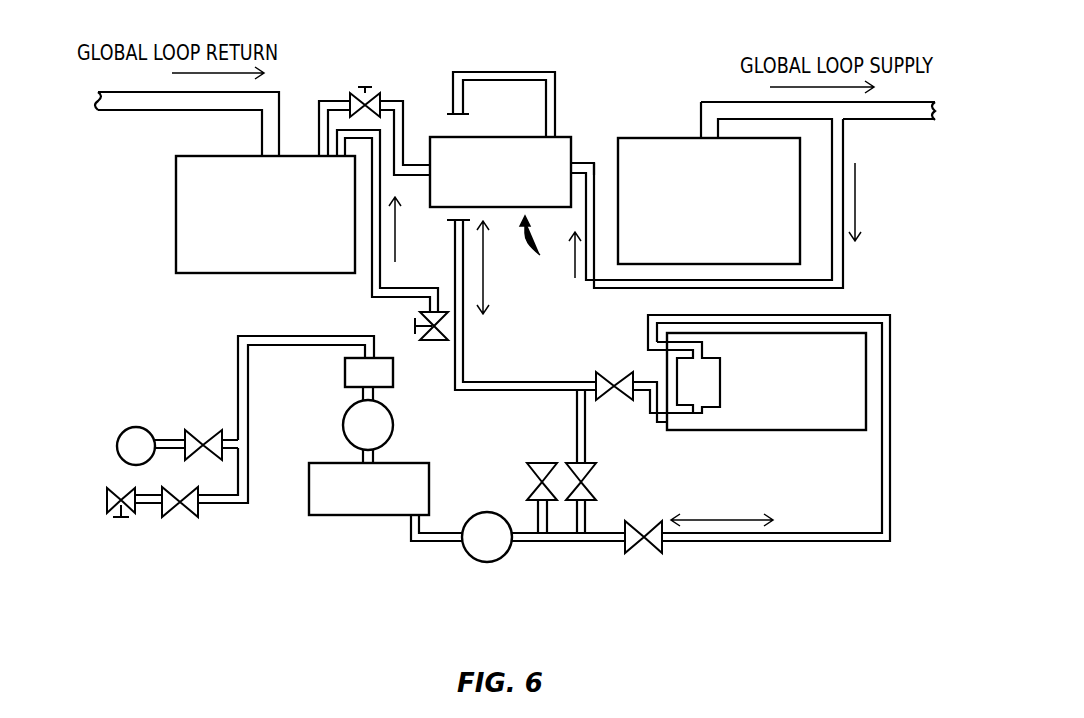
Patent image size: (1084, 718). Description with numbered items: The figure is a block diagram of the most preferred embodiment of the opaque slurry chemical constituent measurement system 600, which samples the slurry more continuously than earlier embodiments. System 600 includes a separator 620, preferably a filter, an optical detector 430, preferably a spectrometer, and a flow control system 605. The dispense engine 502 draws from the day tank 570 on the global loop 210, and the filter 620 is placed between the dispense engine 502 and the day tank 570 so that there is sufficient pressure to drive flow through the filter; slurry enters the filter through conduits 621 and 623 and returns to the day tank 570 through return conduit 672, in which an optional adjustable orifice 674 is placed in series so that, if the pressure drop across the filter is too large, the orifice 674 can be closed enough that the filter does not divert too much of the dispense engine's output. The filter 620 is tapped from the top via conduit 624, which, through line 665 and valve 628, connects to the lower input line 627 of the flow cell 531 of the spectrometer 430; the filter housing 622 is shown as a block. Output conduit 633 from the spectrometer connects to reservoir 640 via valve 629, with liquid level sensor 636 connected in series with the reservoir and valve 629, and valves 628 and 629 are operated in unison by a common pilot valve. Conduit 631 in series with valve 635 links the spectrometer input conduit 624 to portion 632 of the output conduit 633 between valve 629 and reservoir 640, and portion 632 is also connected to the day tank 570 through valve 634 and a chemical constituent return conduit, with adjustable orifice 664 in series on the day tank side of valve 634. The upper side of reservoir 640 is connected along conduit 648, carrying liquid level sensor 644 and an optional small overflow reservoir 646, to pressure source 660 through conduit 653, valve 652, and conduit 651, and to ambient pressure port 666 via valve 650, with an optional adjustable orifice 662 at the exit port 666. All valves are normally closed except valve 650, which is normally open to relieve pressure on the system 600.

The global loop 210 is at (123, 112).
The day tank 570 is at (176, 252).
The return conduit 672 is at (404, 113).
The adjustable orifice 674 is at (355, 92).
The adjustable orifice 664 is at (422, 313).
The filter 622 is at (516, 137).
The conduit 624 is at (517, 72).
The separator 620 is at (539, 249).
The line 623 is at (552, 143).
The conduit 621 is at (597, 168).
The dispense engine 502 is at (690, 243).
The line 665 is at (497, 415).
The valve 628 is at (627, 372).
The lower input line 627 is at (659, 428).
The conduit 631 is at (588, 447).
The detector 430 is at (817, 432).
The flow cell 531 is at (723, 372).
The output conduit 633 is at (800, 541).
The valve 634 is at (525, 467).
The valve 635 is at (598, 487).
The portion of output conduit 632 is at (567, 542).
The valve 629 is at (647, 553).
The liquid level sensor 636 is at (488, 562).
The reservoir 640 is at (320, 515).
The liquid level sensor 644 is at (393, 432).
The overflow reservoir 646 is at (345, 370).
The conduit 648 is at (238, 347).
The conduit 651 is at (248, 467).
The pressure source 660 is at (118, 432).
The conduit 653 is at (170, 448).
The valve 652 is at (197, 430).
The valve 650 is at (200, 514).
The ambient pressure port 666 is at (147, 505).
The adjustable orifice 662 is at (107, 497).
The flow control system 605 is at (107, 586).
The opaque slurry chemical constituent measurement system 600 is at (224, 640).